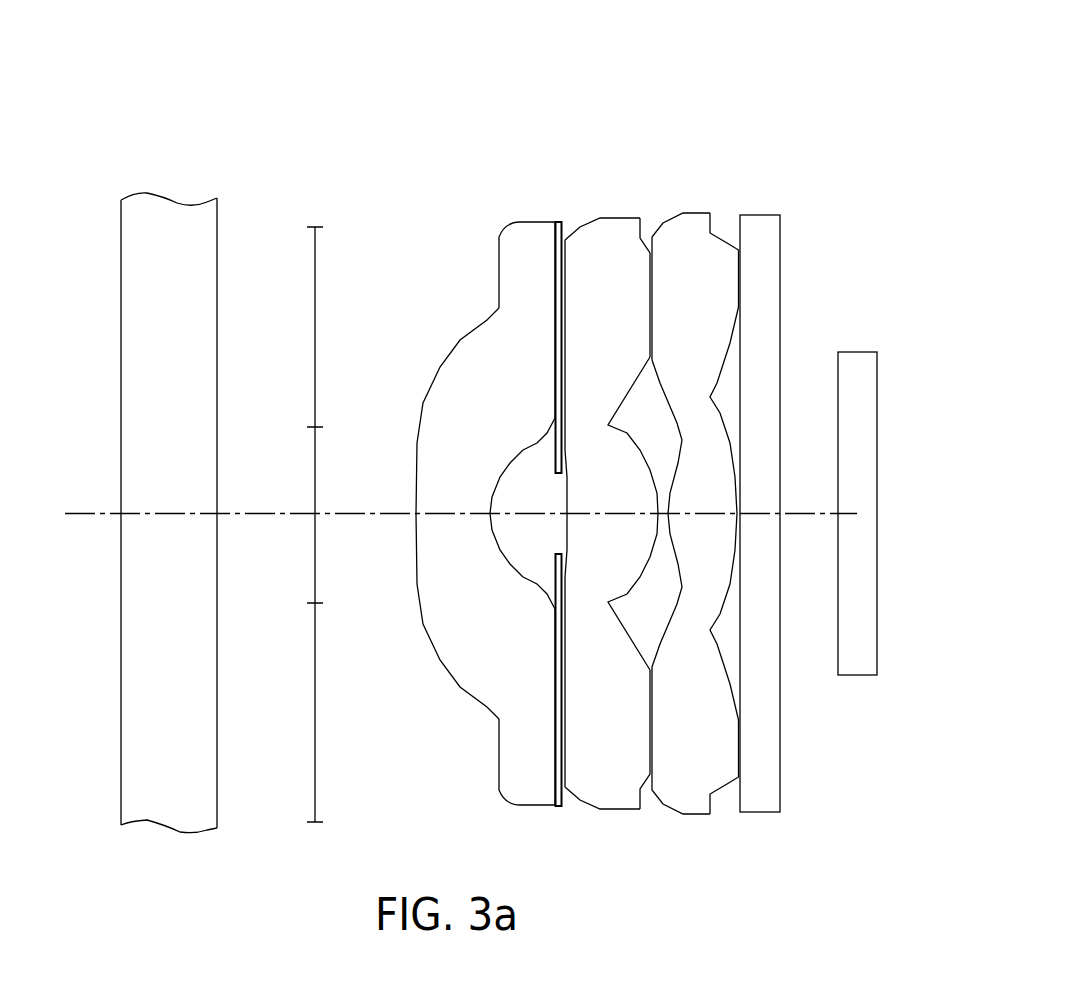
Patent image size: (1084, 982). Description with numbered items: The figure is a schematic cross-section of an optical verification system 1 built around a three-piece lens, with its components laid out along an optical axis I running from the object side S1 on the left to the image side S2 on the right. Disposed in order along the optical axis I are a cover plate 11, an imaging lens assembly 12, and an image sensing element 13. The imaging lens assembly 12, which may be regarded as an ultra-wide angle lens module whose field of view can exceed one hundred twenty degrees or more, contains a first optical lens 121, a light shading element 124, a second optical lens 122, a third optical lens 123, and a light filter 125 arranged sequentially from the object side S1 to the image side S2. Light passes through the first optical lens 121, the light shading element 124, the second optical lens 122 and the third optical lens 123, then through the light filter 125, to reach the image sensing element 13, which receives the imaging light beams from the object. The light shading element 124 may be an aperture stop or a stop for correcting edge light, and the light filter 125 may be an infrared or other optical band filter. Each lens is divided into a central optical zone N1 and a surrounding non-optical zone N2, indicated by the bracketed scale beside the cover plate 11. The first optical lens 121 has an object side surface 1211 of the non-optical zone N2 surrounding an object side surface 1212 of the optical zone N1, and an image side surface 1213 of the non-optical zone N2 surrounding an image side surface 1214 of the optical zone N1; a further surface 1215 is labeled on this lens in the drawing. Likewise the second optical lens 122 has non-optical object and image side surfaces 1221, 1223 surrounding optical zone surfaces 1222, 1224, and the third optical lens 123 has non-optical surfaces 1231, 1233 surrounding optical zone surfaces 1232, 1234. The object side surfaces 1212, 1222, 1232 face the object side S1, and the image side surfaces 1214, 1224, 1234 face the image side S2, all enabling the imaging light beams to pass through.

The optical verification system 1 is at (247, 93).
The cover plate 11 is at (193, 287).
The imaging lens assembly 12 is at (503, 173).
The image sensing element 13 is at (858, 360).
The first optical lens 121 is at (520, 238).
The second optical lens 122 is at (600, 230).
The third optical lens 123 is at (670, 222).
The light shading element 124 is at (565, 228).
The light filter 125 is at (763, 225).
The object side surface of the non-optical zone 1211 is at (498, 283).
The object side surface of the optical zone 1212 is at (418, 482).
The image side surface of the non-optical zone 1213 is at (556, 363).
The image side surface of the optical zone 1214 is at (498, 473).
The connecting surface of first lens 1215 is at (550, 418).
The object side surface of the non-optical zone 1221 is at (648, 308).
The object side surface of the optical zone 1222 is at (568, 522).
The image side surface of the non-optical zone 1223 is at (565, 348).
The image side surface of the optical zone 1224 is at (638, 455).
The object side surface of the non-optical zone 1231 is at (653, 273).
The object side surface of the optical zone 1232 is at (672, 525).
The image side surface of the non-optical zone 1233 is at (740, 285).
The image side surface of the optical zone 1234 is at (727, 457).
The optical zone N1 is at (315, 527).
The non-optical zone N2 is at (315, 305).
The object side S1 is at (57, 427).
The image side S2 is at (947, 427).
The optical axis I is at (451, 514).